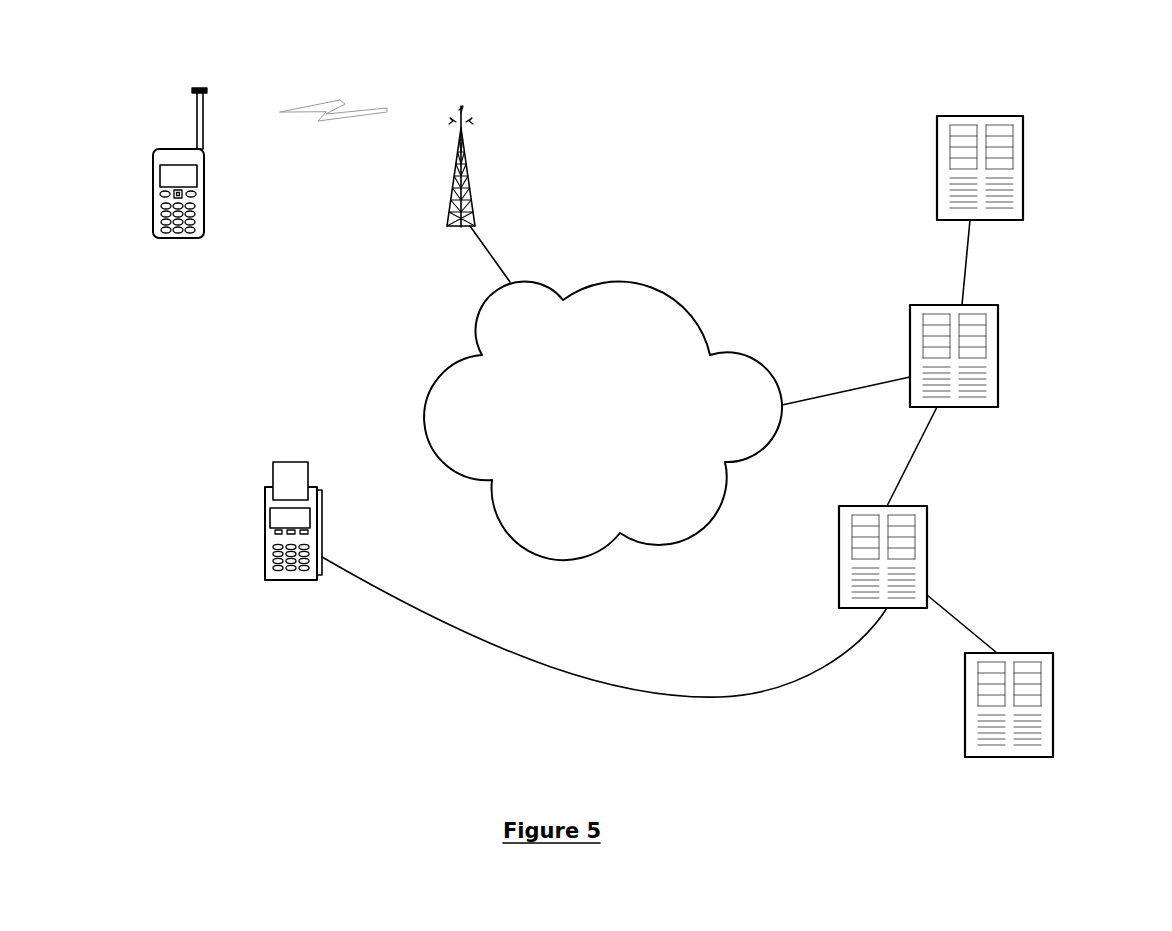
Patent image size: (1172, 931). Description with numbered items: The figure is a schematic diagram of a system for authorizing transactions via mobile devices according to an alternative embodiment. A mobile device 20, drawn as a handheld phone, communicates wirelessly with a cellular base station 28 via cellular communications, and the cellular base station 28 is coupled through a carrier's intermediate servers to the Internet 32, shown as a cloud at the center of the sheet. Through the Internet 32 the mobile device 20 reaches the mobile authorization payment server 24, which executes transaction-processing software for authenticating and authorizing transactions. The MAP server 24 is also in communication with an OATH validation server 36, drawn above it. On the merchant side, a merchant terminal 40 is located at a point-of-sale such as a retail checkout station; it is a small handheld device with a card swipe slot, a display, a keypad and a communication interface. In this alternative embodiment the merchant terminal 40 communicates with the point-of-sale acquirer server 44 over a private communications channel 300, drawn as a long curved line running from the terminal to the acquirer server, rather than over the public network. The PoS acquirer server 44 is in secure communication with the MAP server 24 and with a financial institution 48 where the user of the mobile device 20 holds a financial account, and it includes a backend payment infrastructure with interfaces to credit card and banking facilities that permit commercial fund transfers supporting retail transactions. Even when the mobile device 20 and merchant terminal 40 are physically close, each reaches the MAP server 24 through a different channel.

The mobile device 20 is at (150, 185).
The cellular base station 28 is at (466, 160).
The Internet 32 is at (591, 443).
The OATH validation server 36 is at (973, 116).
The mobile authorization payment server 24 is at (999, 338).
The point-of-sale acquirer server 44 is at (928, 535).
The financial institution 48 is at (1027, 653).
The merchant terminal 40 is at (263, 510).
The private communications channel 300 is at (470, 652).